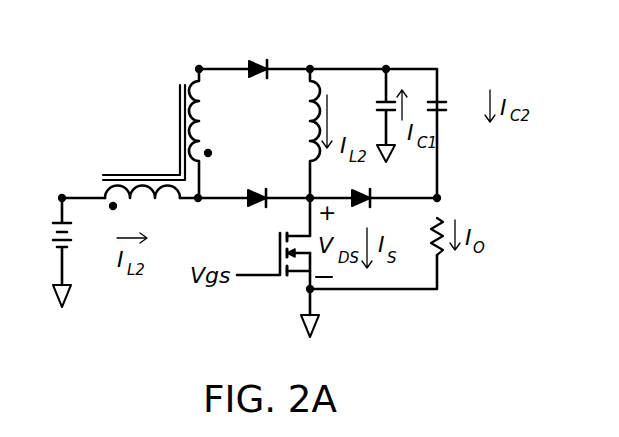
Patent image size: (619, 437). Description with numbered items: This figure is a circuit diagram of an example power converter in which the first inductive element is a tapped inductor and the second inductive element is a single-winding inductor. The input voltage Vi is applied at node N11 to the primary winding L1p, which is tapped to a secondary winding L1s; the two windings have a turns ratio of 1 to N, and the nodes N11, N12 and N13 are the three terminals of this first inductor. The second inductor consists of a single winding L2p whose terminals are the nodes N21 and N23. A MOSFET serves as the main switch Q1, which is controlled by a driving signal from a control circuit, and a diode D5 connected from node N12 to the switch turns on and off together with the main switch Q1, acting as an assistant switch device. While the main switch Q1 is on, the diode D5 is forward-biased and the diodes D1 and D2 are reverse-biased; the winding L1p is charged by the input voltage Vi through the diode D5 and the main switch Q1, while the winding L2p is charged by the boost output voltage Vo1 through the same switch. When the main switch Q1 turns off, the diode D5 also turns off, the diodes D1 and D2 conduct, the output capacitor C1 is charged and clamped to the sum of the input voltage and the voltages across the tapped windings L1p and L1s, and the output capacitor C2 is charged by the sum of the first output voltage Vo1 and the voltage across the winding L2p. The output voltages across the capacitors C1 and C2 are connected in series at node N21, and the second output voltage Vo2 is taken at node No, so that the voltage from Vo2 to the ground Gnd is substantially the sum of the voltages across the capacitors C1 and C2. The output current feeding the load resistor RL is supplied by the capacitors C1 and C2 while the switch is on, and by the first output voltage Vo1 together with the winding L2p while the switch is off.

The node of the first inductor N13 is at (200, 54).
The node of the second inductor N21 is at (311, 54).
The first output voltage Vo1 is at (391, 54).
The node of the first inductor N11 is at (62, 182).
The node of the first inductor N12 is at (202, 212).
The node of the second inductor N23 is at (333, 183).
The output node No is at (421, 187).
The second output voltage Vo2 is at (485, 197).
The ground Gnd is at (399, 295).
The diode D1 is at (260, 84).
The diode D5 is at (260, 186).
The diode D2 is at (369, 213).
The turns ratio primary part 1 is at (144, 132).
The turns ratio secondary part N is at (156, 105).
The secondary tapped winding L1s is at (212, 133).
The inductor winding of the second inductor L2p is at (294, 133).
The primary inductor winding L1p is at (142, 206).
The input voltage Vi is at (46, 252).
The output capacitor C1 is at (368, 115).
The output capacitor C2 is at (452, 107).
The load resistor RL is at (420, 236).
The main switch Q1 is at (273, 254).